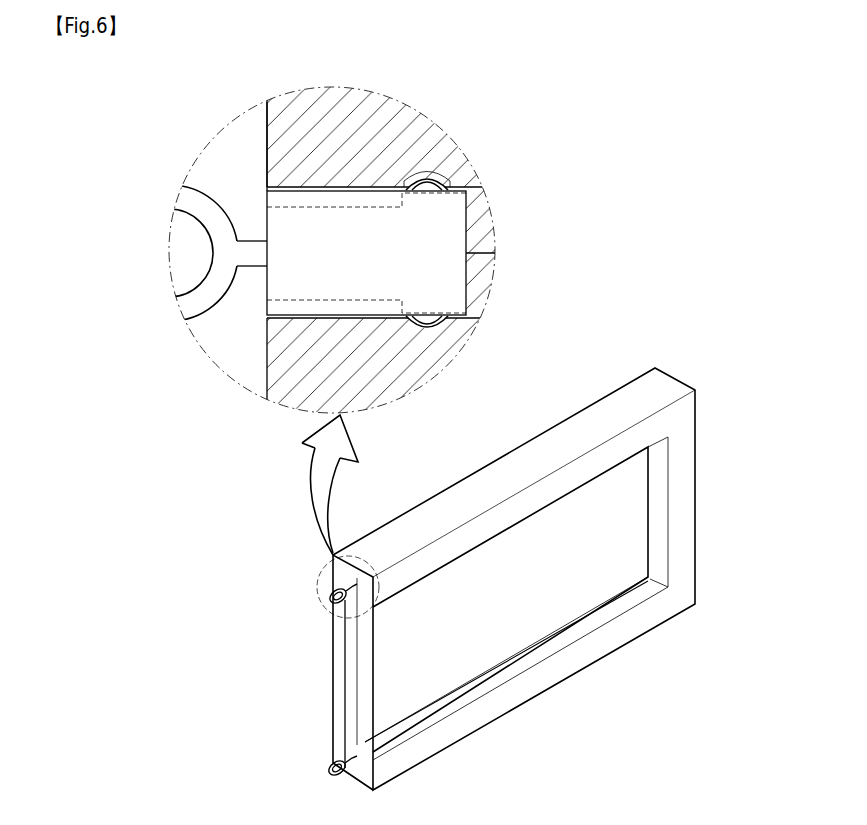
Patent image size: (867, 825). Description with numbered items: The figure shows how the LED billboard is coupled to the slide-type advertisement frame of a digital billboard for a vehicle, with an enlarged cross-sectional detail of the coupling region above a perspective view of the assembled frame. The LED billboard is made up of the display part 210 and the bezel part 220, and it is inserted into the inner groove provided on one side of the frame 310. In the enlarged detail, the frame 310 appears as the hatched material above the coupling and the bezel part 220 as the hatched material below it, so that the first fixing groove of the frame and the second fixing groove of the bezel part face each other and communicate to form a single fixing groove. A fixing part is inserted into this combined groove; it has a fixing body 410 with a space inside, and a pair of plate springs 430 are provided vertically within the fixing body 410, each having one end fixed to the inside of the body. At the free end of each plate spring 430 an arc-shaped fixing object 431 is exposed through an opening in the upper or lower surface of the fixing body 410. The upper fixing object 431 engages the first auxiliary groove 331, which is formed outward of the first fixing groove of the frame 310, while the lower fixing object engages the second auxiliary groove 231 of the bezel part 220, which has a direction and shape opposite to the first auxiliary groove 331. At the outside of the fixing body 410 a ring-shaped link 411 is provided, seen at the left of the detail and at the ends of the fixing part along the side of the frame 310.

The frame 310 is at (443, 150).
The bezel part 220 is at (437, 363).
The fixing body 410 is at (445, 273).
The plate spring 430 is at (382, 298).
The arc-shaped fixing object 431 is at (426, 178).
The first auxiliary groove 331 is at (413, 190).
The second auxiliary groove 231 is at (405, 321).
The ring-shaped link 411 is at (187, 302).
The display part 210 is at (615, 573).